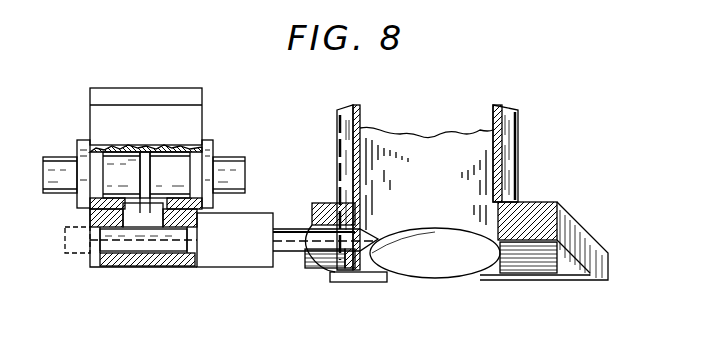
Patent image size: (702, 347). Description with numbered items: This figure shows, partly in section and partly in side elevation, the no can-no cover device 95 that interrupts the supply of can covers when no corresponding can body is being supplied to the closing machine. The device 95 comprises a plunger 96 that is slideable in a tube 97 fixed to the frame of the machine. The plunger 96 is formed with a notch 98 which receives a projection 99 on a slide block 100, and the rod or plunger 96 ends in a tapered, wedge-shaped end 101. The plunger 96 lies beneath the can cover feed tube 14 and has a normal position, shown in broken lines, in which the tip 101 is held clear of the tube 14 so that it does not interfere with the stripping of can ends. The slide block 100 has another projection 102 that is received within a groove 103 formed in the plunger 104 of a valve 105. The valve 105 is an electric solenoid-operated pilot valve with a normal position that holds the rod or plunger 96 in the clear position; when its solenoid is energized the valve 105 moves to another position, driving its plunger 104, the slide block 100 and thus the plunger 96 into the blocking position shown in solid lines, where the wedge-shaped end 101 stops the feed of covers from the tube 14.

The can cover feed tube 14 is at (515, 132).
The no can-no cover device 95 is at (243, 270).
The plunger 96 is at (288, 253).
The tube 97 is at (235, 240).
The notch 98 is at (152, 265).
The projection 99 is at (130, 265).
The slide block 100 is at (143, 215).
The tapered, wedge-shaped end 101 is at (362, 270).
The projection 102 is at (150, 196).
The groove 103 is at (148, 170).
The plunger 104 is at (121, 175).
The valve 105 is at (213, 136).